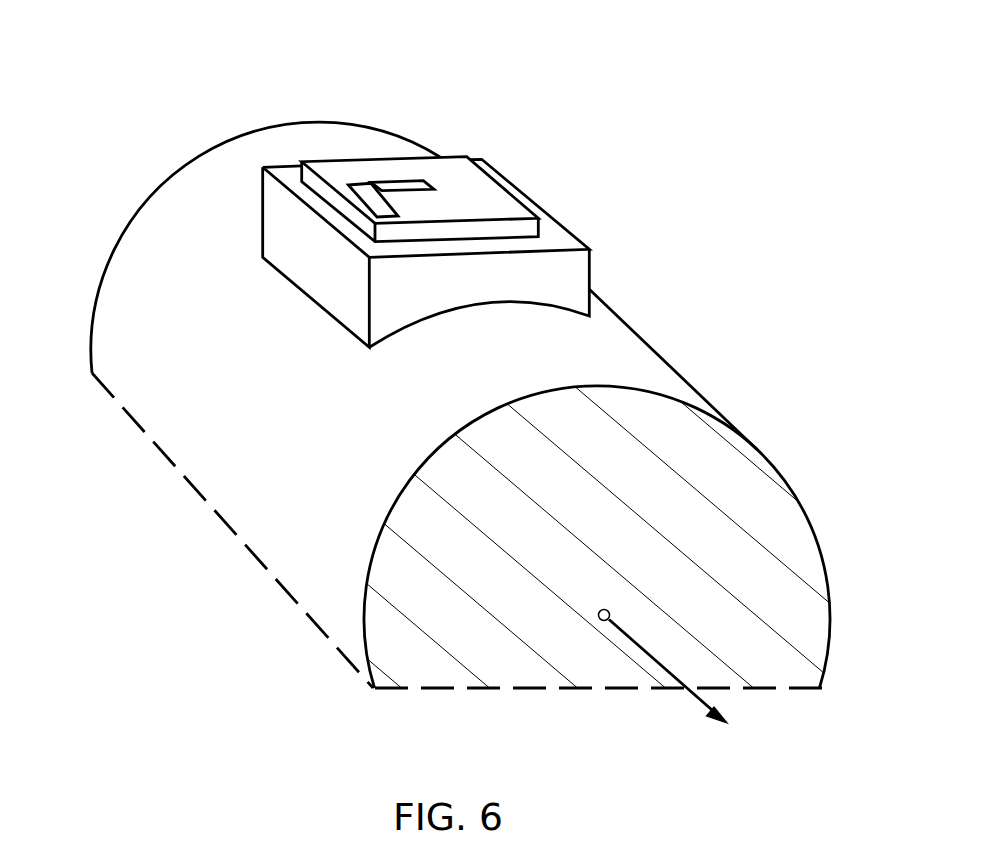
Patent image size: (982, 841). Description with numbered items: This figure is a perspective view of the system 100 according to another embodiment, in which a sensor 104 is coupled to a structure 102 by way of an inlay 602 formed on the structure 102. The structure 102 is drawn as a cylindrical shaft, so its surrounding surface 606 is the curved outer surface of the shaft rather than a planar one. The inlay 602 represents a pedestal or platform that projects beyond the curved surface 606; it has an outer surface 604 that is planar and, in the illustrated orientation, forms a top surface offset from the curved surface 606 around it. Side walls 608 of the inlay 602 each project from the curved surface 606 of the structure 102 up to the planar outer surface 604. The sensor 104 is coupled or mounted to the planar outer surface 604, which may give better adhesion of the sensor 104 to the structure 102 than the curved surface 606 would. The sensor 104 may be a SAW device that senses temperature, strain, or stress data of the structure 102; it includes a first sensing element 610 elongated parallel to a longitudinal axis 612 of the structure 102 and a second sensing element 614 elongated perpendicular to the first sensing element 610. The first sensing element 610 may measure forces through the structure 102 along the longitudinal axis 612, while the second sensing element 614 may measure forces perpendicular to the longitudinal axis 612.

The system 100 is at (448, 66).
The structure 102 is at (492, 405).
The sensor 104 is at (420, 158).
The inlay 602 is at (355, 220).
The outer surface 604 is at (555, 233).
The surface 606 is at (634, 350).
The side walls 608 is at (302, 260).
The first sensing element 610 is at (367, 189).
The longitudinal axis 612 is at (690, 690).
The second sensing element 614 is at (398, 185).